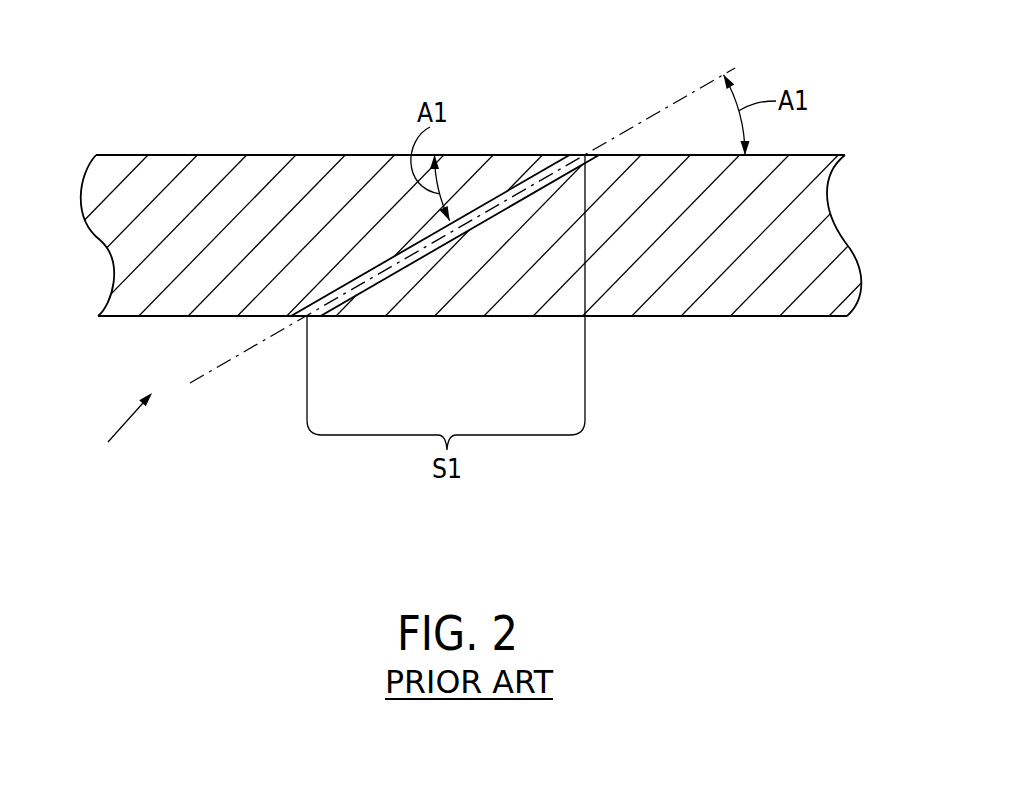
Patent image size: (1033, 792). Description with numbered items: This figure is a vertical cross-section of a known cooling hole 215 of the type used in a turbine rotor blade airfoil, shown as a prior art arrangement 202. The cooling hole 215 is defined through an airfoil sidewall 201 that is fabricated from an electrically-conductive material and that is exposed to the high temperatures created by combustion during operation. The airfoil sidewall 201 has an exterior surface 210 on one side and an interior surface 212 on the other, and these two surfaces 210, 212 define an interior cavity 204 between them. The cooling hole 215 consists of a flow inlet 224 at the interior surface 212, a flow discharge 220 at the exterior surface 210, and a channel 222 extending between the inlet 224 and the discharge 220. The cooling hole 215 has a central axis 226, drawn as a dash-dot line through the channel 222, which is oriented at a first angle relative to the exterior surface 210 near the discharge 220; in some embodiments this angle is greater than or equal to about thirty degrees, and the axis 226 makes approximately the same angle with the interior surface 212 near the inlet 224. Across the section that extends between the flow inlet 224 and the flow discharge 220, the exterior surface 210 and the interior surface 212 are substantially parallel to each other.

The airfoil sidewall 201 is at (194, 266).
The prior art plate assembly 202 is at (180, 110).
The interior cavity 204 is at (107, 425).
The exterior surface 210 is at (247, 155).
The interior surface 212 is at (201, 317).
The cooling hole 215 is at (384, 299).
The flow discharge 220 is at (586, 141).
The channel 222 is at (457, 250).
The flow inlet 224 is at (313, 331).
The central axis 226 is at (666, 108).